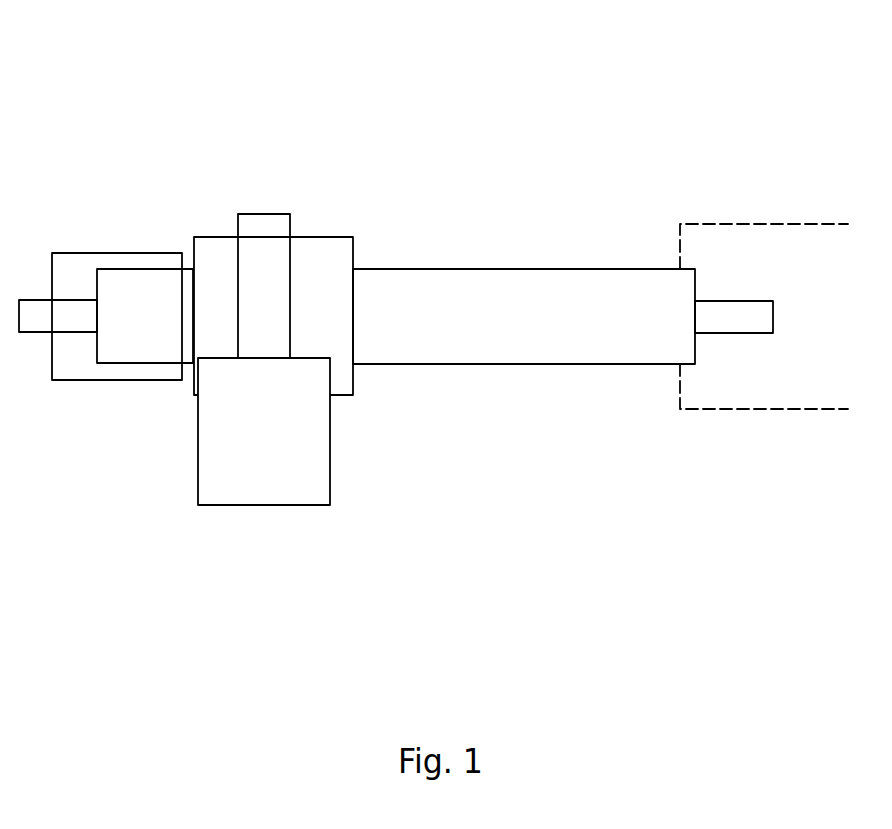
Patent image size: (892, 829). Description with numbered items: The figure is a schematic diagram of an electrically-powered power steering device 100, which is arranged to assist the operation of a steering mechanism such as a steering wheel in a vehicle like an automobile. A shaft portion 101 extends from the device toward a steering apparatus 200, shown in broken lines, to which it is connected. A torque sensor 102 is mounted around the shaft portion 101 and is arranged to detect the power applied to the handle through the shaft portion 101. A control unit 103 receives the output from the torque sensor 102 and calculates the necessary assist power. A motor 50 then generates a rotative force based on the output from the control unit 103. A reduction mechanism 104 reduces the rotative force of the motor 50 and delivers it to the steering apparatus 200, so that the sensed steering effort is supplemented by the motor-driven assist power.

The power steering device 100 is at (168, 122).
The shaft portion 101 is at (528, 268).
The torque sensor 102 is at (355, 253).
The control unit 103 is at (90, 381).
The reduction mechanism 104 is at (265, 213).
The motor 50 is at (330, 472).
The steering apparatus 200 is at (758, 220).